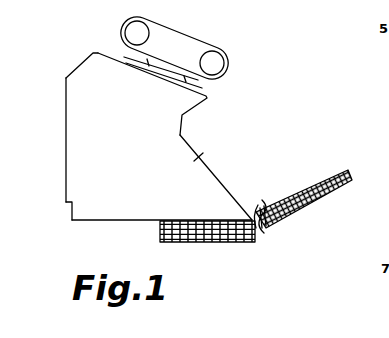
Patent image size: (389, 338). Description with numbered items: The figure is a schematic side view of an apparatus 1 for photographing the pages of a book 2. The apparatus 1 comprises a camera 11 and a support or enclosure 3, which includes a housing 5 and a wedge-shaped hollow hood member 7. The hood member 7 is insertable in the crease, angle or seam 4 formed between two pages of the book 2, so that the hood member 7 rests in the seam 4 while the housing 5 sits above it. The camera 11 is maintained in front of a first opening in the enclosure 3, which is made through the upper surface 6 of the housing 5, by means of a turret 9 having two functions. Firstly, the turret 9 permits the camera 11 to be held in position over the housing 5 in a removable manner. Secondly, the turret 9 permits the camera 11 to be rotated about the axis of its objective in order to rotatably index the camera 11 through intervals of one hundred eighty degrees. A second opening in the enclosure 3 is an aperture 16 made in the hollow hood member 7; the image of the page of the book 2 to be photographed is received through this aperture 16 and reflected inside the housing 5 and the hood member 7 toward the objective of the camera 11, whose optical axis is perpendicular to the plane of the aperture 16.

The apparatus 1 is at (190, 27).
The book 2 is at (290, 224).
The support or enclosure 3 is at (60, 178).
The crease, angle or seam 4 is at (265, 205).
The housing 5 is at (90, 200).
The upper surface 6 is at (99, 53).
The wedge-shaped hollow hood member 7 is at (201, 156).
The turret 9 is at (200, 86).
The camera 11 is at (198, 50).
The aperture 16 is at (153, 226).